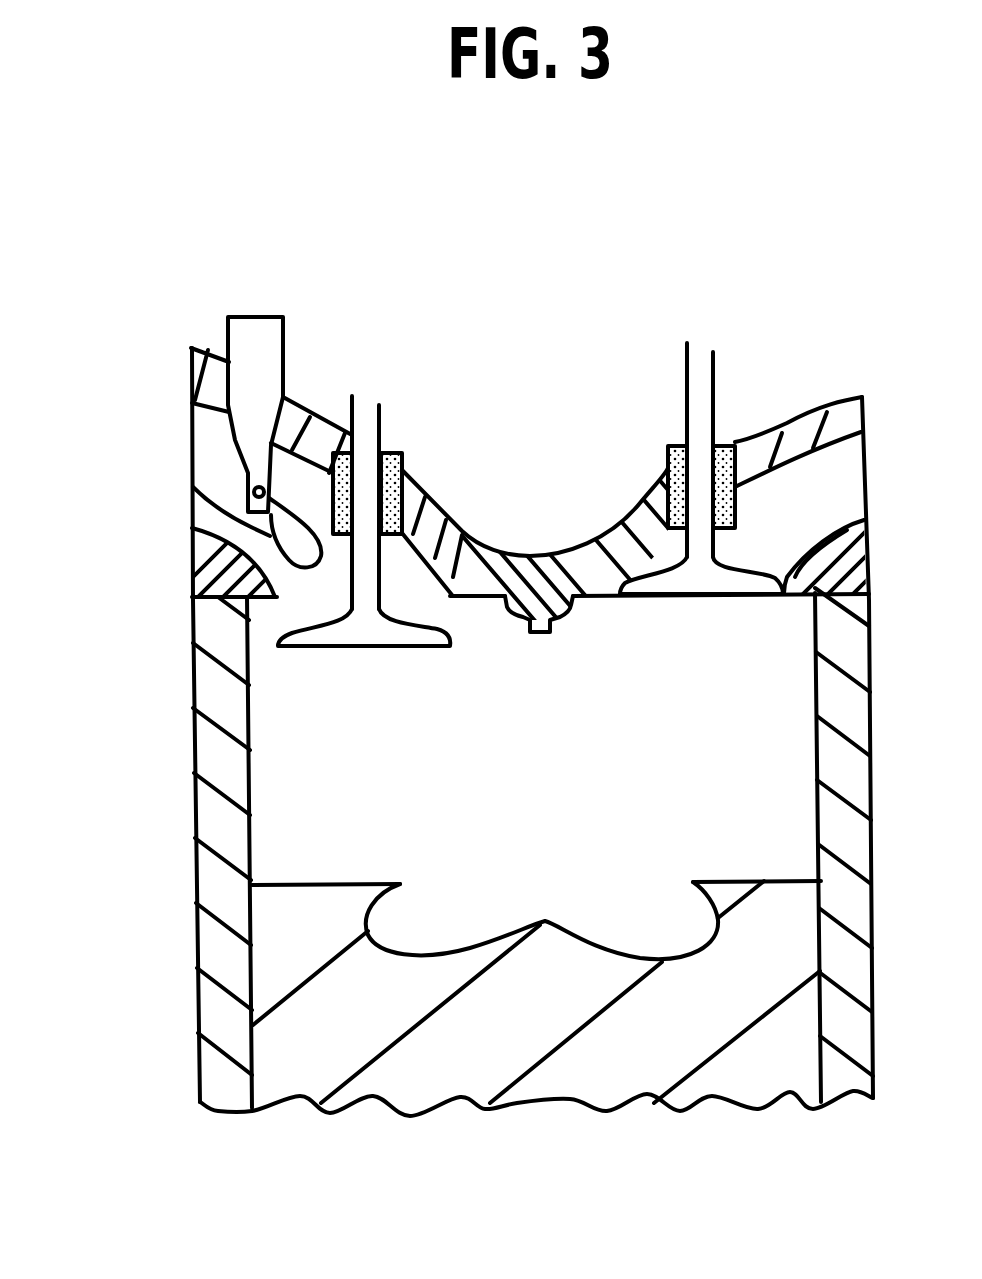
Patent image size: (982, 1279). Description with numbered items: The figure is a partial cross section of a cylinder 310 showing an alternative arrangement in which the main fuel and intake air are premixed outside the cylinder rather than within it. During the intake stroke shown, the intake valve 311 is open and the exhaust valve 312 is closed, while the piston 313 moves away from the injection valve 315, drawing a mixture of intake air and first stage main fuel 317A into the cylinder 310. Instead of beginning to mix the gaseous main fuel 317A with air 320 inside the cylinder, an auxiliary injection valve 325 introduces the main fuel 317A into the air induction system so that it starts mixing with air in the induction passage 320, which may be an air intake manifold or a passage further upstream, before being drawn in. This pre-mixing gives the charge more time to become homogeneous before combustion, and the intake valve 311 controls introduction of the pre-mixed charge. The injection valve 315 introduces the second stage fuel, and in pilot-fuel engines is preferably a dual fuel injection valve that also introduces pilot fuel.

The cylinder 310 is at (487, 798).
The intake valve 311 is at (381, 427).
The exhaust valve 312 is at (713, 387).
The piston 313 is at (530, 1042).
The injection valve 315 is at (487, 540).
The first stage main fuel 317A is at (192, 495).
The induction passage 320 is at (203, 457).
The auxiliary injection valve 325 is at (283, 337).